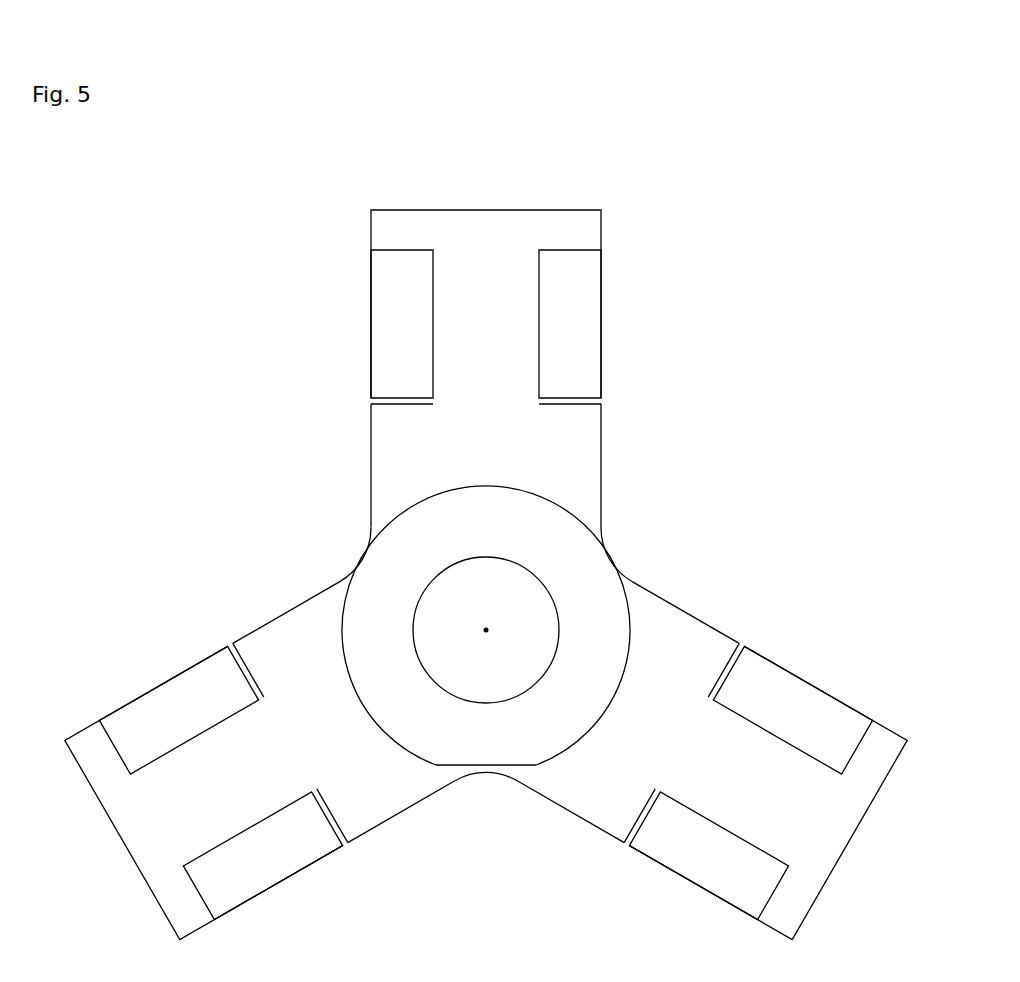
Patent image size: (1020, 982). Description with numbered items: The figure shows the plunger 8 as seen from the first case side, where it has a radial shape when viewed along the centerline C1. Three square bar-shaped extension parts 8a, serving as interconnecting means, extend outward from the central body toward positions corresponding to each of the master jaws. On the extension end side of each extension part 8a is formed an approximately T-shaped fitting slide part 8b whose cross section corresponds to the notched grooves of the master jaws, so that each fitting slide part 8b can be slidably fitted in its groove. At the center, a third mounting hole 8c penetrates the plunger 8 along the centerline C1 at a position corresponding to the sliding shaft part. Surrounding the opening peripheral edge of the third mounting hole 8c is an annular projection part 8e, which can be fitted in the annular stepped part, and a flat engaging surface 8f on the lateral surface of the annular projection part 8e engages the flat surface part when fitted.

The plunger 8 is at (770, 100).
The extension part 8a is at (602, 432).
The fitting slide part 8b is at (485, 237).
The third mounting hole 8c is at (512, 568).
The annular projection part 8e is at (629, 652).
The engaging surface 8f is at (517, 767).
The centerline C1 is at (486, 632).